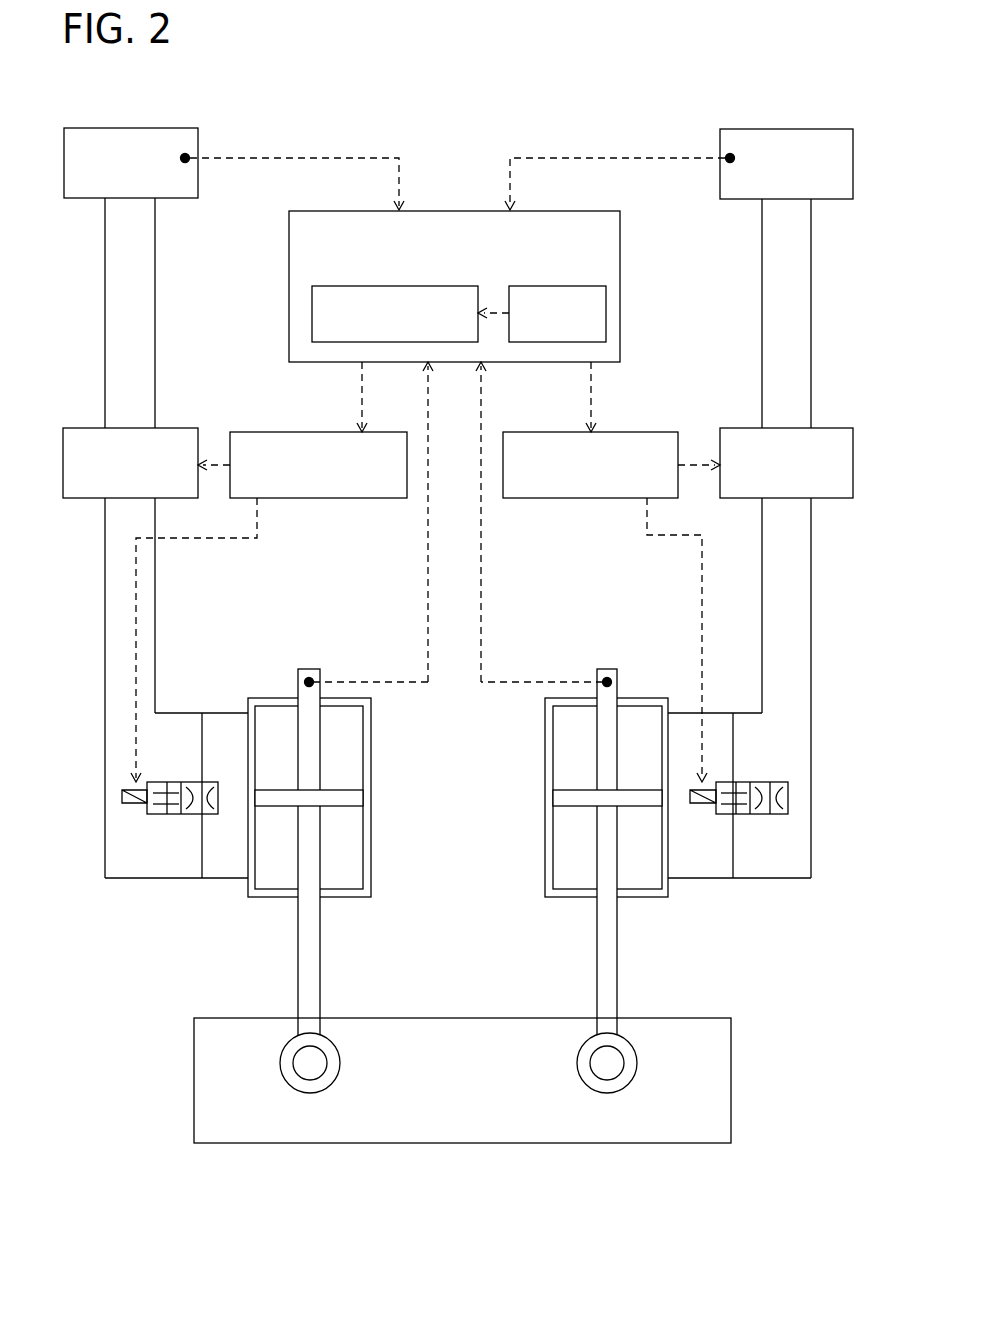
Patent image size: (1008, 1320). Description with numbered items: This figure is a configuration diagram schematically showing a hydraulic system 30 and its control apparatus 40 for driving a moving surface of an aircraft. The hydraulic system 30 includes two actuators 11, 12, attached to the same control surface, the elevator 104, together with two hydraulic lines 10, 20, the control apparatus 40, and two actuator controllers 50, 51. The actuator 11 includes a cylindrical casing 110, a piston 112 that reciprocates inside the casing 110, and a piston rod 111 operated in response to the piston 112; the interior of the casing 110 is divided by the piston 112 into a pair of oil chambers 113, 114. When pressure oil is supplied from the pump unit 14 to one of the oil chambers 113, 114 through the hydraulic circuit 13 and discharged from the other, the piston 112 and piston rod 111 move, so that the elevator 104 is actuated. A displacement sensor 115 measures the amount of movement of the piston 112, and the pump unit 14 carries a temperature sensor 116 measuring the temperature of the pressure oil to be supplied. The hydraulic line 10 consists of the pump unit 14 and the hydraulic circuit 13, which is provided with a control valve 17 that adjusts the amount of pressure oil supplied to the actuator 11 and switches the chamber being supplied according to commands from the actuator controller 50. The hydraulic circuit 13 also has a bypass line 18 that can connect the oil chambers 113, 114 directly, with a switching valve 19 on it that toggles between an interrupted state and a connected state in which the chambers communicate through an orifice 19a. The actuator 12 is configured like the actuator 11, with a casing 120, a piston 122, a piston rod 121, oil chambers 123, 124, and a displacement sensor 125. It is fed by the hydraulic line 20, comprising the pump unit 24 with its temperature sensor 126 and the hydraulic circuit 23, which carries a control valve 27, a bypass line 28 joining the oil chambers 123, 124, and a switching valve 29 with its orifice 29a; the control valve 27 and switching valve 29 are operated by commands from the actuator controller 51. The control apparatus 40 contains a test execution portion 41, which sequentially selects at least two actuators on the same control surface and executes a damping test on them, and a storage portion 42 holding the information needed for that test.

The hydraulic line 10 is at (175, 328).
The actuator 11 is at (332, 830).
The actuator 12 is at (586, 830).
The hydraulic circuit 13 is at (100, 271).
The pump unit 14 is at (198, 186).
The control valve 17 is at (168, 425).
The bypass line 18 is at (228, 748).
The switching valve 19 is at (170, 800).
The orifice 19a is at (190, 782).
The hydraulic line 20 is at (738, 335).
The hydraulic circuit 23 is at (748, 257).
The pump unit 24 is at (720, 186).
The control valve 27 is at (822, 425).
The bypass line 28 is at (733, 844).
The switching valve 29 is at (745, 800).
The orifice 29a is at (778, 782).
The hydraulic system 30 is at (487, 133).
The control apparatus 40 is at (580, 210).
The test execution portion 41 is at (428, 285).
The storage portion 42 is at (560, 286).
The actuator controller 50 is at (282, 430).
The actuator controller 51 is at (628, 432).
The elevator 104 is at (443, 1137).
The casing 110 is at (352, 898).
The piston rod 111 is at (320, 981).
The piston 112 is at (364, 798).
The oil chamber 113 is at (348, 878).
The oil chamber 114 is at (346, 778).
The displacement sensor 115 is at (312, 678).
The temperature sensor 116 is at (188, 154).
The casing 120 is at (565, 898).
The piston rod 121 is at (597, 1001).
The piston 122 is at (552, 798).
The oil chamber 123 is at (566, 878).
The oil chamber 124 is at (568, 778).
The displacement sensor 125 is at (610, 678).
The temperature sensor 126 is at (726, 154).